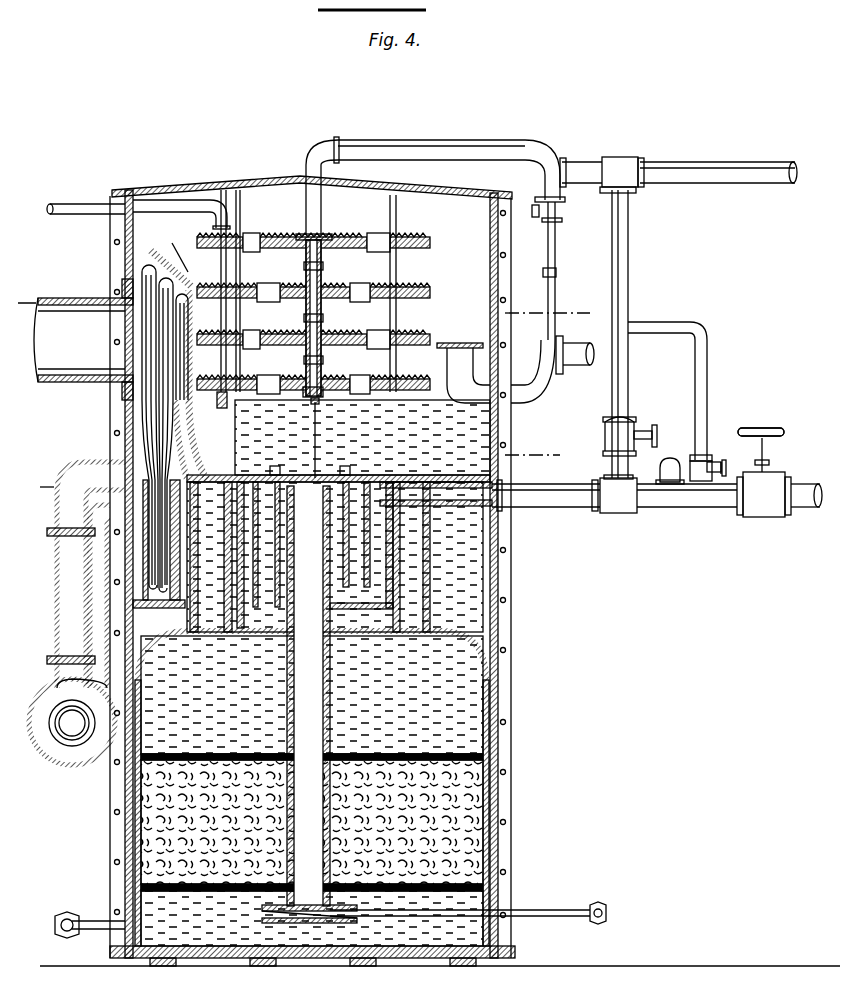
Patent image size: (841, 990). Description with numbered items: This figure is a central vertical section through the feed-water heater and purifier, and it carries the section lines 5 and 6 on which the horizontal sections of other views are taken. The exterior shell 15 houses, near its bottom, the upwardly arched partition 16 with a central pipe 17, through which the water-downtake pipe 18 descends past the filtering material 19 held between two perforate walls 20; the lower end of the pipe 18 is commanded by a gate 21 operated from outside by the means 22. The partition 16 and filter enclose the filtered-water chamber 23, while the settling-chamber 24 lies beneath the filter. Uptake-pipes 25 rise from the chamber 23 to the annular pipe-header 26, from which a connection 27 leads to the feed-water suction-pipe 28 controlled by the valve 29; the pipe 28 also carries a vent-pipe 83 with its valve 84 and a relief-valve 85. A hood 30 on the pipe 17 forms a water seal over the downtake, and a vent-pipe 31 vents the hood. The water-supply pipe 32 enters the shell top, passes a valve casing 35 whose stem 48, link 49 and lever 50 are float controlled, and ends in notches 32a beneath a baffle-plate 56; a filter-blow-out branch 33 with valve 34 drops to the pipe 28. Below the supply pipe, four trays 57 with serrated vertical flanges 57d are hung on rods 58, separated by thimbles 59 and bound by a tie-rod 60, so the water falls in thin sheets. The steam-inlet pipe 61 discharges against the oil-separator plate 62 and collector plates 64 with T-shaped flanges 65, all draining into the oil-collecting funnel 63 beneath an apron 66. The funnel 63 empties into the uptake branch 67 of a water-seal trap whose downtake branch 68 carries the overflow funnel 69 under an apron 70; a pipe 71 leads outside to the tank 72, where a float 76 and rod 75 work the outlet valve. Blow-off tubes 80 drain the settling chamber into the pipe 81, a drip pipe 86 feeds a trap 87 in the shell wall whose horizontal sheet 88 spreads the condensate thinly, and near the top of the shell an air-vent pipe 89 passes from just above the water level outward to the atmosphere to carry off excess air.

The section line 5 5 is at (311, 300).
The section line 6 6 is at (18, 486).
The exterior shell 15 is at (499, 620).
The partition 16 is at (488, 642).
The pipe 17 is at (340, 600).
The water-downtake pipe 18 is at (330, 723).
The filtering material 19 is at (470, 818).
The perforate walls 20 is at (470, 757).
The gate 21 is at (300, 922).
The gate-operating means 22 is at (560, 908).
The filtered-water chamber 23 is at (312, 695).
The settling-chamber 24 is at (312, 918).
The uptake-pipes 25 is at (210, 550).
The pipe-header 26 is at (412, 478).
The connection 27 is at (470, 505).
The feed-water suction-pipe 28 is at (583, 510).
The valve 29 is at (764, 472).
The hood 30 is at (352, 570).
The vent-pipe 31 is at (320, 402).
The water-supply pipe 32 is at (706, 162).
The notches 32a is at (325, 238).
The filter-blow-out branch 33 is at (630, 268).
The valve 34 is at (630, 430).
The valve casing 35 is at (548, 160).
The stem 48 is at (556, 250).
The link 49 is at (556, 290).
The lever 50 is at (560, 374).
The baffle-plate 56 is at (332, 238).
The trays 57 is at (432, 244).
The vertical flanges 57d is at (408, 378).
The rods 58 is at (398, 321).
The thimbles 59 is at (324, 266).
The tie-rod 60 is at (305, 319).
The steam-inlet pipe 61 is at (83, 339).
The plate 62 is at (193, 335).
The oil-collecting funnel 63 is at (165, 430).
The oil-collector plates 64 is at (150, 338).
The T-shaped flanges 65 is at (188, 268).
The apron 66 is at (170, 262).
The uptake branch 67 is at (128, 550).
The downtake branch 68 is at (80, 488).
The funnel 69 is at (135, 442).
The apron 70 is at (228, 400).
The pipe 71 is at (87, 595).
The tank 72 is at (42, 745).
The rod 75 is at (70, 735).
The float 76 is at (69, 723).
The blow-off tubes 80 is at (95, 918).
The pipe 81 is at (54, 926).
The vent-pipe 83 is at (707, 394).
The valve 84 is at (716, 460).
The relief-valve 85 is at (670, 458).
The drip pipe 86 is at (582, 366).
The trap 87 is at (533, 395).
The horizontal sheet 88 is at (447, 345).
The inlet pipe 89 is at (168, 208).